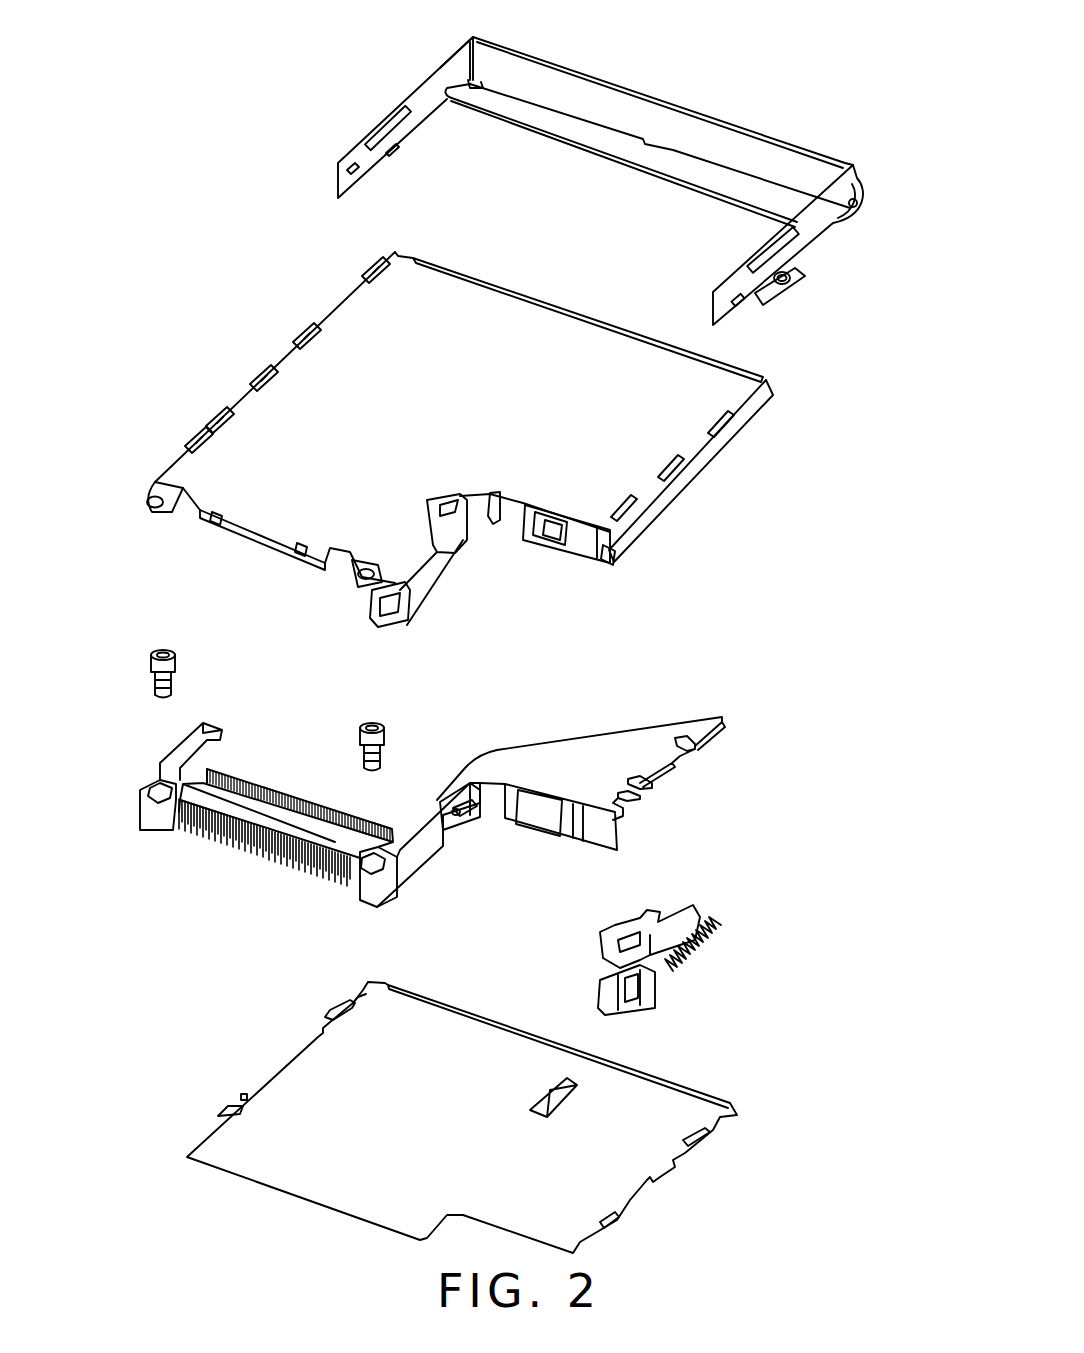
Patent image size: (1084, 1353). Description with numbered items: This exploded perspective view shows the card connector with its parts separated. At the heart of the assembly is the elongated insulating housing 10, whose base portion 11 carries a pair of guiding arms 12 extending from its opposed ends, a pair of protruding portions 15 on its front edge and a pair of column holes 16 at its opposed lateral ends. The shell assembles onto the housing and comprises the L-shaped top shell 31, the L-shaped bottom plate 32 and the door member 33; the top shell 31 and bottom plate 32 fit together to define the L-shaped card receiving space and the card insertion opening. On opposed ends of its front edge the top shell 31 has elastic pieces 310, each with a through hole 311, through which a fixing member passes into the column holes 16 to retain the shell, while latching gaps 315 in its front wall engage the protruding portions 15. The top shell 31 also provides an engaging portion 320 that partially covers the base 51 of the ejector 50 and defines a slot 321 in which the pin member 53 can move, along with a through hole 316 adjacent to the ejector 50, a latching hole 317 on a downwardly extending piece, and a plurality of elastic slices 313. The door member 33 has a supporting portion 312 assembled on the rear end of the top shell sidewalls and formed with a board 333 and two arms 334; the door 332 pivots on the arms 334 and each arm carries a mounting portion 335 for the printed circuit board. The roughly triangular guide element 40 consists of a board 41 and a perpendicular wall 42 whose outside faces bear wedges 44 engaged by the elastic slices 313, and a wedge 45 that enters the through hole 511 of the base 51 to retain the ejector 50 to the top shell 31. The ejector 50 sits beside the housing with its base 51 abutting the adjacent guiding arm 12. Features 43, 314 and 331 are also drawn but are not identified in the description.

The insulating housing 10 is at (155, 832).
The base portion 11 is at (268, 810).
The guiding arms 12 is at (180, 745).
The protruding portions 15 is at (290, 865).
The column holes 16 is at (158, 786).
The top shell 31 is at (665, 378).
The elastic piece 310 is at (150, 492).
The through hole 311 is at (147, 505).
The supporting portion 312 is at (725, 440).
The elastic slice 313 is at (622, 513).
The latch box 314 is at (535, 548).
The latching gaps 315 is at (297, 558).
The through hole 316 is at (620, 543).
The latching hole 317 is at (495, 540).
The engaging portion 320 is at (407, 623).
The slot 321 is at (423, 597).
The bottom plate 32 is at (667, 1112).
The door member 33 is at (371, 101).
The top wall 331 is at (452, 60).
The door 332 is at (690, 128).
The board 333 is at (712, 173).
The arms 334 is at (362, 142).
The mounting portion 335 is at (790, 295).
The guide element 40 is at (657, 720).
The board 41 is at (580, 757).
The perpendicular wall 42 is at (540, 810).
The connecting portion 43 is at (447, 792).
The wedges 44 is at (650, 793).
The wedge 45 is at (488, 815).
The ejector 50 is at (585, 936).
The base 51 is at (685, 895).
The through hole 511 is at (700, 912).
The pin member 53 is at (675, 973).